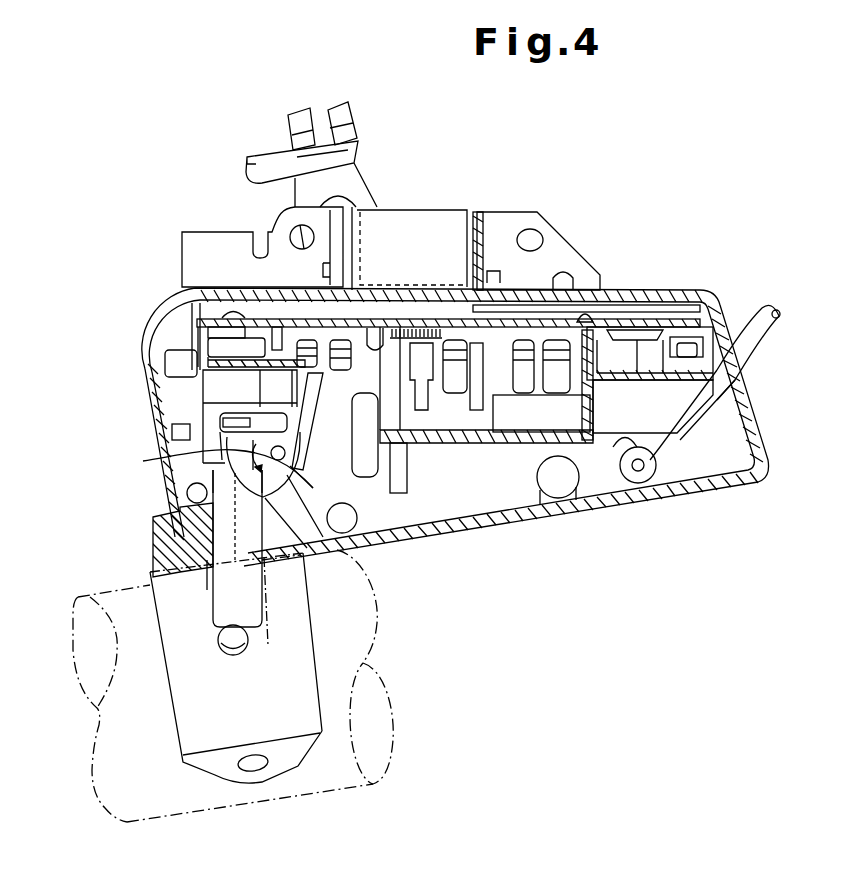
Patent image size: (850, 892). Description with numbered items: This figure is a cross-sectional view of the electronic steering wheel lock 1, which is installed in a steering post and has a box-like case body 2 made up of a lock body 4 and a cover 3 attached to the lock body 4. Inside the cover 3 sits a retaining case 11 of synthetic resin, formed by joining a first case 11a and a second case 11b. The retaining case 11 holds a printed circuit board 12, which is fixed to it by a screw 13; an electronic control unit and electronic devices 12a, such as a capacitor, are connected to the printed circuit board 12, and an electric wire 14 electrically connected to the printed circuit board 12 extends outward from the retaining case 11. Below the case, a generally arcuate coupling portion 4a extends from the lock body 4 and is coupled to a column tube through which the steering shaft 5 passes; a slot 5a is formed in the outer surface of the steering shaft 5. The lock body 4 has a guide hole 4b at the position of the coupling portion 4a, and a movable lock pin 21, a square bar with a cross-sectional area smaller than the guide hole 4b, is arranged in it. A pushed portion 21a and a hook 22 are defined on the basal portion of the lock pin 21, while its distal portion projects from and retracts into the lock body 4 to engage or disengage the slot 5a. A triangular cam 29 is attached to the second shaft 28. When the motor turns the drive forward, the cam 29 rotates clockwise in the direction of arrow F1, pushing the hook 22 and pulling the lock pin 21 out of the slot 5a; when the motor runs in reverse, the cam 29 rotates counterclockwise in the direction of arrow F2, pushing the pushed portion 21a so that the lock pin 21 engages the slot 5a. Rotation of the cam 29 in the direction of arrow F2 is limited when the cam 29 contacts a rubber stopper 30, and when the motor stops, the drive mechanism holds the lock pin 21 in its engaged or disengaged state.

The electronic steering wheel lock 1 is at (615, 203).
The case body 2 is at (147, 352).
The cover 3 is at (707, 290).
The lock body 4 is at (157, 523).
The coupling portion 4a is at (182, 730).
The guide hole 4b is at (207, 590).
The steering shaft 5 is at (310, 790).
The slot 5a is at (267, 627).
The retaining case 11 is at (616, 286).
The first case 11a is at (528, 297).
The second case 11b is at (475, 440).
The printed circuit board 12 is at (723, 322).
The electronic devices 12a is at (523, 387).
The screw 13 is at (581, 314).
The electric wire 14 is at (763, 340).
The lock pin 21 is at (252, 595).
The pushed portion 21a is at (237, 499).
The hook 22 is at (268, 421).
The second shaft 28 is at (275, 448).
The cam 29 is at (297, 575).
The rubber stopper 30 is at (352, 478).
The arrow F1 is at (315, 484).
The arrow F2 is at (211, 469).